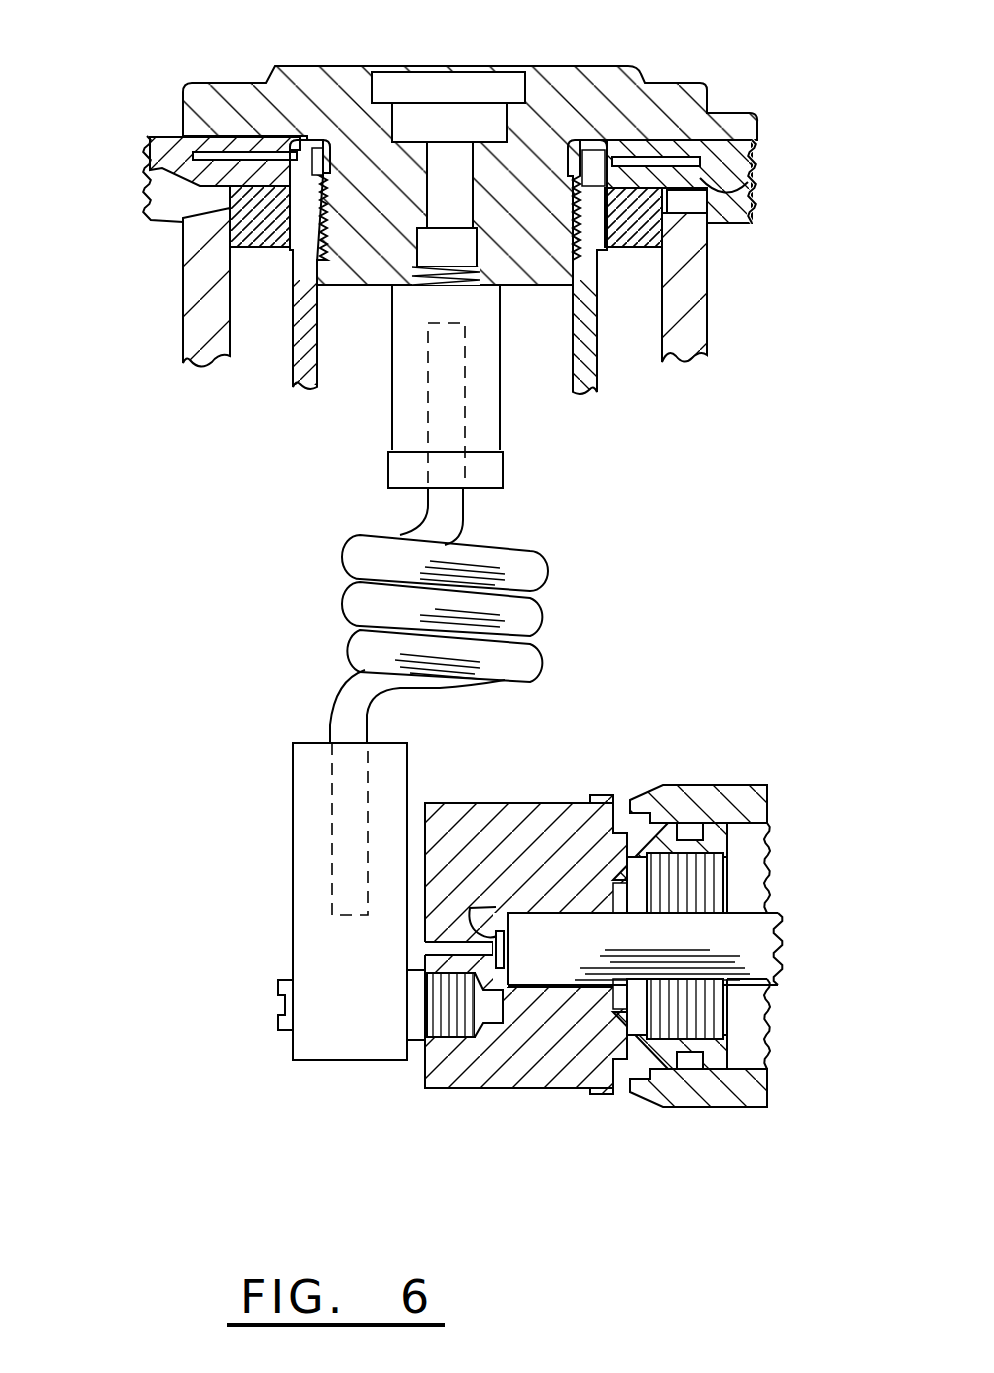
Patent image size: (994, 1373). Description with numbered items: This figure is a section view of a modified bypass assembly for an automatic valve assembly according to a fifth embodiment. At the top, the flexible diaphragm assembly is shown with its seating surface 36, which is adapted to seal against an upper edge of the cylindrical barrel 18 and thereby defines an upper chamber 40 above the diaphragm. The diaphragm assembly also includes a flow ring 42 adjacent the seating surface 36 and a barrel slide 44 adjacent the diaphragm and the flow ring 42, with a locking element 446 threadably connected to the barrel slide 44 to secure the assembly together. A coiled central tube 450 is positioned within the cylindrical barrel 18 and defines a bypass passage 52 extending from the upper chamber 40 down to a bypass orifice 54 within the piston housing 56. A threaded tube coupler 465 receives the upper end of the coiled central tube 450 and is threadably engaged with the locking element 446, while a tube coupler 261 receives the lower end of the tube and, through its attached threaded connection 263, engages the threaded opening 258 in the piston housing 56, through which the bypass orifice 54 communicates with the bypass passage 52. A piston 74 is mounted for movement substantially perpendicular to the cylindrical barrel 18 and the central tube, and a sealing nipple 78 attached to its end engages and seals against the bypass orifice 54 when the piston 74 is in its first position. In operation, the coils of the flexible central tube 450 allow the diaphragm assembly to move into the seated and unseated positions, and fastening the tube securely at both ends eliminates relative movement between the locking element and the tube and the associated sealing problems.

The upper chamber 40 is at (457, 35).
The bypass passage 52 is at (452, 323).
The seating surface 36 is at (748, 198).
The cylindrical barrel 18 is at (712, 306).
The flow ring 42 is at (230, 247).
The barrel slide 44 is at (295, 360).
The locking element 446 is at (545, 290).
The tube coupler 465 is at (503, 422).
The coiled central tube 450 is at (547, 571).
The tube coupler 261 is at (293, 895).
The threaded connection 263 is at (416, 1043).
The threaded opening 258 is at (462, 1040).
The bypass orifice 54 is at (443, 940).
The sealing nipple 78 is at (498, 930).
The piston 74 is at (588, 958).
The piston housing 56 is at (562, 1090).